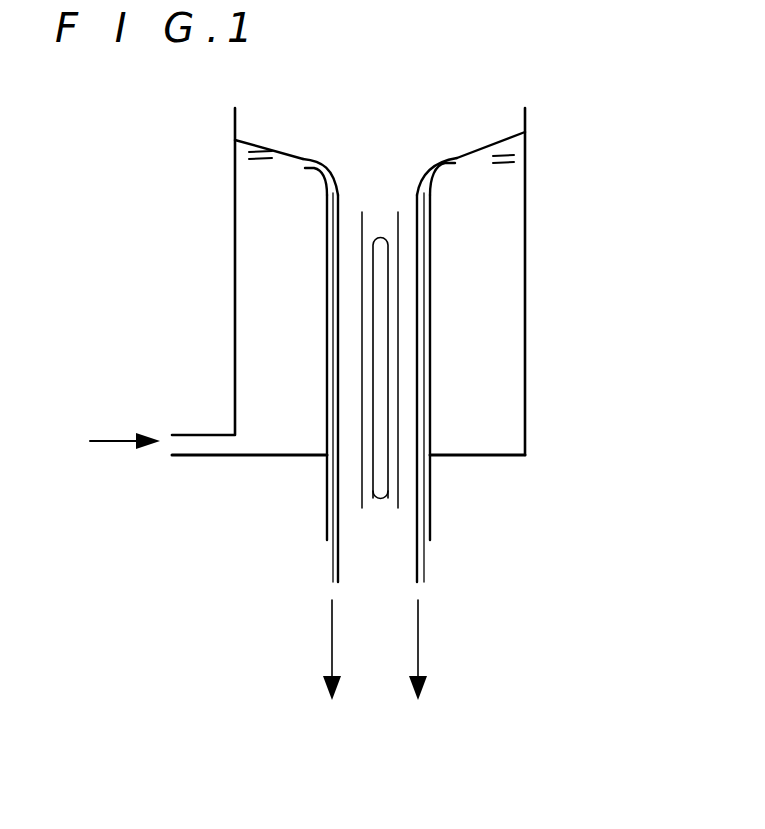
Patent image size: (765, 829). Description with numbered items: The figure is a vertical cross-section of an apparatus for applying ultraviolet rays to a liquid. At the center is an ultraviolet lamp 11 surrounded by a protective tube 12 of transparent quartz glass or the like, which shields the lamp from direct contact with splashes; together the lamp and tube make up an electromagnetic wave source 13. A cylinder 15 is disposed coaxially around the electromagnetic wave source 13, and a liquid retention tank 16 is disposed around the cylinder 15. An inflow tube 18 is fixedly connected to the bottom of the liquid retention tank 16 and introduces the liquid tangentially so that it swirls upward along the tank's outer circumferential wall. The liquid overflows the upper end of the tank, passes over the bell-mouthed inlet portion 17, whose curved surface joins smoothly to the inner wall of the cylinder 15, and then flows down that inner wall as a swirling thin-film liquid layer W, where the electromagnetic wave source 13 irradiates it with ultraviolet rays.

The ultraviolet lamp 11 is at (388, 262).
The protective tube 12 is at (400, 298).
The electromagnetic wave source 13 is at (513, 360).
The cylinder 15 is at (327, 243).
The liquid retention tank 16 is at (235, 318).
The inlet portion 17 is at (312, 165).
The inflow tube 18 is at (215, 458).
The thin-film liquid layer W is at (424, 553).